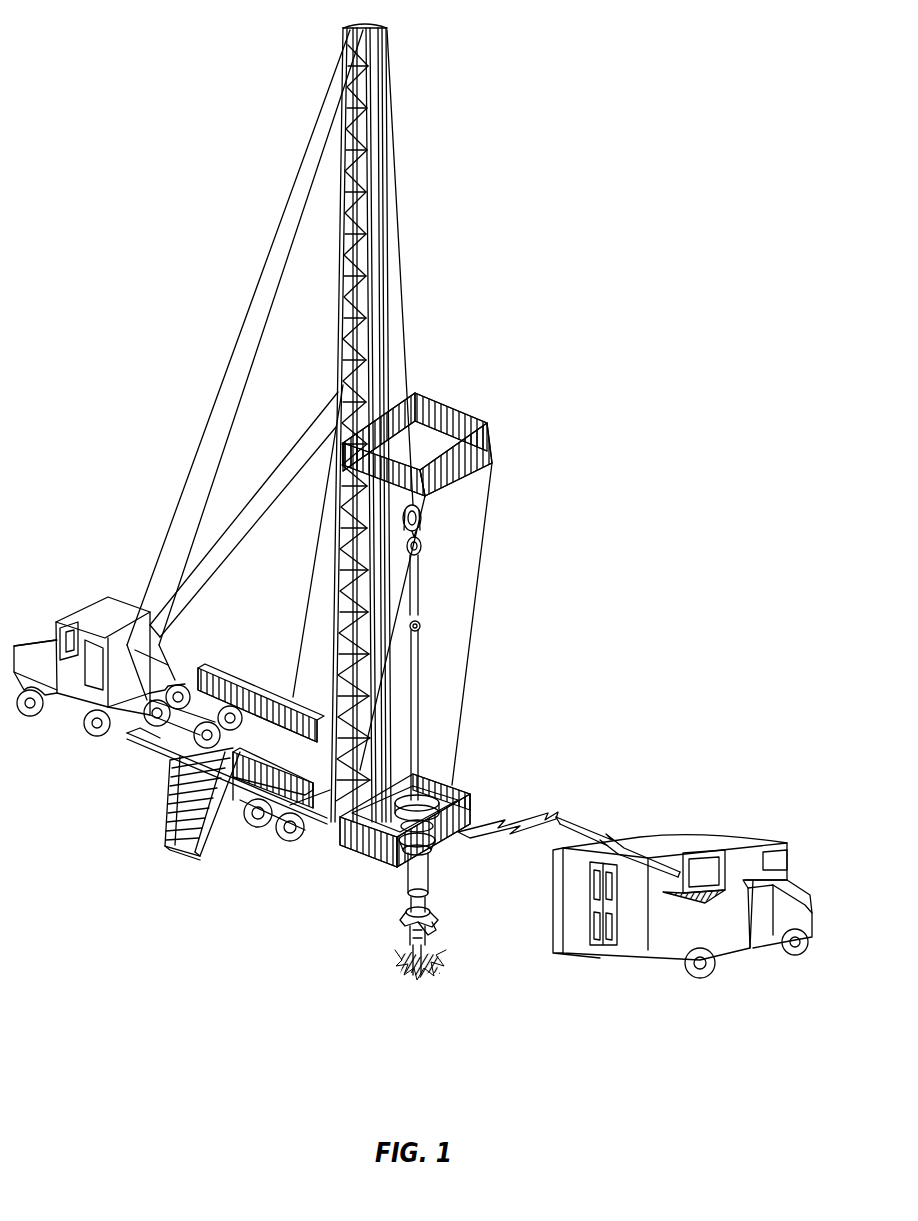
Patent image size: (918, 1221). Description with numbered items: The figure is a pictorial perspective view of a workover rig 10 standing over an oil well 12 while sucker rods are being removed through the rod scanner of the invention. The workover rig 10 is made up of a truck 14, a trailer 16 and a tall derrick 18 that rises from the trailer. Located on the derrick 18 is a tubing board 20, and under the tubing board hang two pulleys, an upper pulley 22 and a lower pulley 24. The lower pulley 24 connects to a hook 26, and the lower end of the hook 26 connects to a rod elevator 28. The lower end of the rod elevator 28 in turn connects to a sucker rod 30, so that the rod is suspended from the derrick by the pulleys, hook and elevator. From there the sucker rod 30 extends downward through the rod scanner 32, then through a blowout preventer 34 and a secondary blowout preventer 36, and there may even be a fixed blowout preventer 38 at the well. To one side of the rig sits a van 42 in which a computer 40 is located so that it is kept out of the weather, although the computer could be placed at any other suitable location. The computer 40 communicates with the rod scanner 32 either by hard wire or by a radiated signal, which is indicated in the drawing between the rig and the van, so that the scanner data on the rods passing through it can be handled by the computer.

The workover rig 10 is at (478, 246).
The oil well 12 is at (426, 948).
The truck 14 is at (99, 612).
The trailer 16 is at (178, 753).
The derrick 18 is at (390, 172).
The tubing board 20 is at (426, 442).
The pulley 22 is at (426, 517).
The lower pulley 24 is at (422, 546).
The hook 26 is at (428, 572).
The rod elevator 28 is at (432, 620).
The sucker rod 30 is at (420, 670).
The rod scanner 32 is at (455, 785).
The blowout preventer 34 is at (398, 912).
The secondary blowout preventer 36 is at (432, 842).
The fixed blowout preventer 38 is at (396, 875).
The computer 40 is at (712, 852).
The van 42 is at (665, 842).